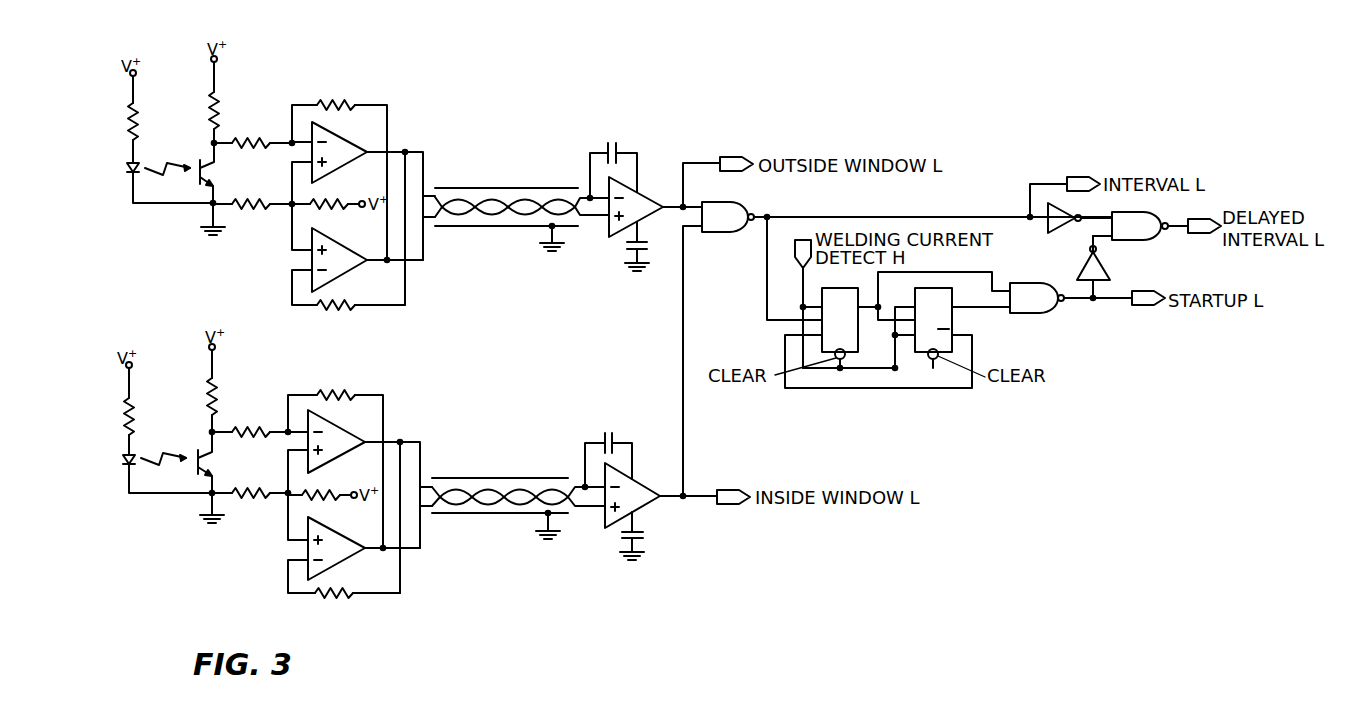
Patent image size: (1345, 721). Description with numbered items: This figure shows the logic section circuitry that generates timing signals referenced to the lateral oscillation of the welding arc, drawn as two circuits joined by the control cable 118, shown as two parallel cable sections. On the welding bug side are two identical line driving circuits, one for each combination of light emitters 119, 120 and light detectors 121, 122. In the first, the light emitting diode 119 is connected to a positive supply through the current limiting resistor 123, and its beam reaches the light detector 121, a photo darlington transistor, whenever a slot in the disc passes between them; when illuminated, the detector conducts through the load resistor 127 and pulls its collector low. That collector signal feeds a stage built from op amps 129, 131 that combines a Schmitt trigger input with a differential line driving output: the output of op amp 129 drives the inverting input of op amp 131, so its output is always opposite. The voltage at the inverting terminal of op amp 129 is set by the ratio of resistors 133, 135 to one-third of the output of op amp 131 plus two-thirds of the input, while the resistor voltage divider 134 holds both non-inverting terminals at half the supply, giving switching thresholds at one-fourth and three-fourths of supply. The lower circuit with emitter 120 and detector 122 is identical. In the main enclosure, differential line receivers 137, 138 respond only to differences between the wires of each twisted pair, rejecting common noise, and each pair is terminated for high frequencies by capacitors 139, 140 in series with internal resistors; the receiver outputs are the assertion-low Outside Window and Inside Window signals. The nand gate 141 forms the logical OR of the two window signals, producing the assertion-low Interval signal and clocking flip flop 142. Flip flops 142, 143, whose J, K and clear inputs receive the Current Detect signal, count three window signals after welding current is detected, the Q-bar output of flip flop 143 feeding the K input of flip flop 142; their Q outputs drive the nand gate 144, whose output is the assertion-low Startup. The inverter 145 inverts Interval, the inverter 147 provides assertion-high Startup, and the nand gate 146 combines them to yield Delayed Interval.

The control cable 118 is at (495, 227).
The light emitting diode 119 is at (125, 170).
The light emitter 120 is at (123, 462).
The light detector 121 is at (199, 177).
The light detector 122 is at (197, 468).
The current limiting resistor 123 is at (125, 110).
The load resistor 127 is at (207, 93).
The op amp 129 is at (342, 167).
The op amp 131 is at (337, 237).
The resistor 133 is at (267, 147).
The resistor voltage divider 134 is at (282, 210).
The resistor 135 is at (340, 110).
The differential line receiver 137 is at (608, 237).
The differential line receiver 138 is at (647, 507).
The capacitor 139 is at (610, 145).
The capacitor 140 is at (797, 258).
The nand gate 141 is at (730, 228).
The flip flop 142 is at (857, 340).
The flip flop 143 is at (953, 330).
The nand gate 144 is at (1047, 312).
The inverter 145 is at (1050, 232).
The nand gate 146 is at (1147, 240).
The inverter 147 is at (1105, 270).